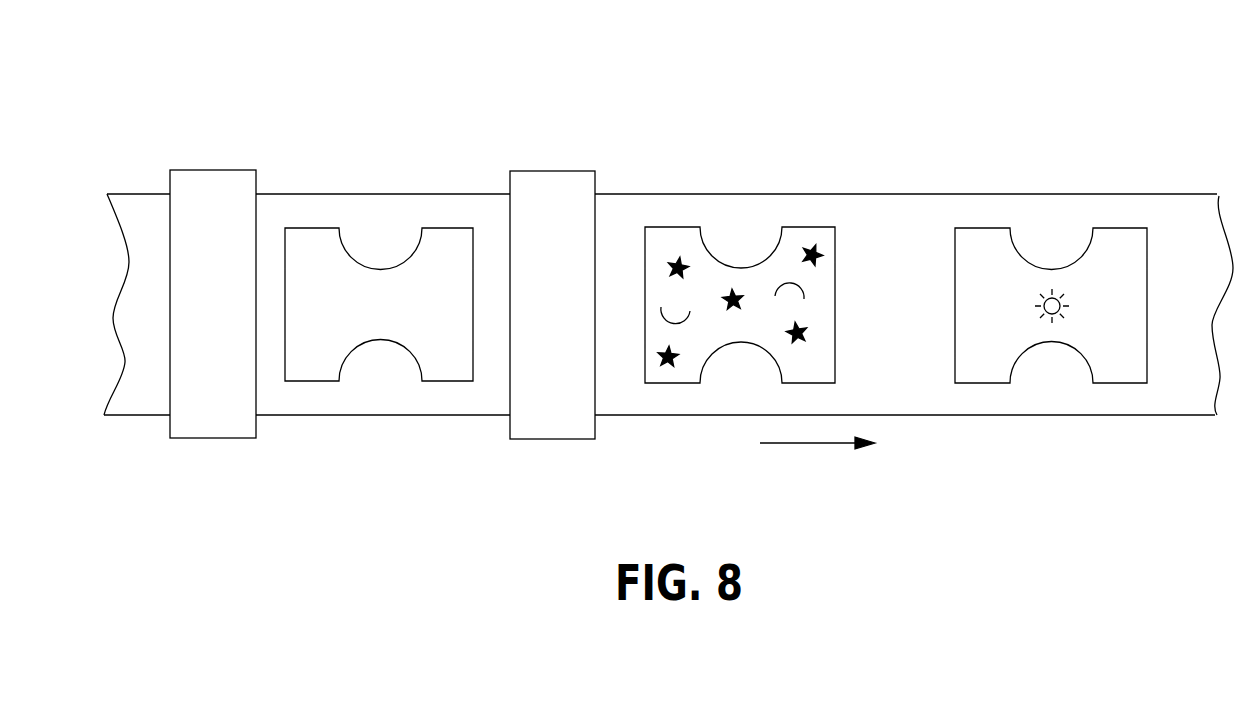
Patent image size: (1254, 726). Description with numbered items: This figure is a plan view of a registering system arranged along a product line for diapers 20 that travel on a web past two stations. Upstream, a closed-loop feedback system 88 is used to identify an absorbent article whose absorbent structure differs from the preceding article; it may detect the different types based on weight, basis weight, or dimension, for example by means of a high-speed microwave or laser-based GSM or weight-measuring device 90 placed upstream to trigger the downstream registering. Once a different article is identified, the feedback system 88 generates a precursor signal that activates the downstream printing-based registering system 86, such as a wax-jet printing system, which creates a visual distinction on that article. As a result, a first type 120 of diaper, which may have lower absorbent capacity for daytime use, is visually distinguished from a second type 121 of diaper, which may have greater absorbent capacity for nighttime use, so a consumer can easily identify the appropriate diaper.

The closed-loop feedback system 88 is at (274, 124).
The weight-measuring device 90 is at (202, 438).
The printing-based registering system 86 is at (562, 171).
The diaper 20 is at (446, 228).
The second type of diaper 121 is at (808, 227).
The first type of diaper 120 is at (1122, 228).